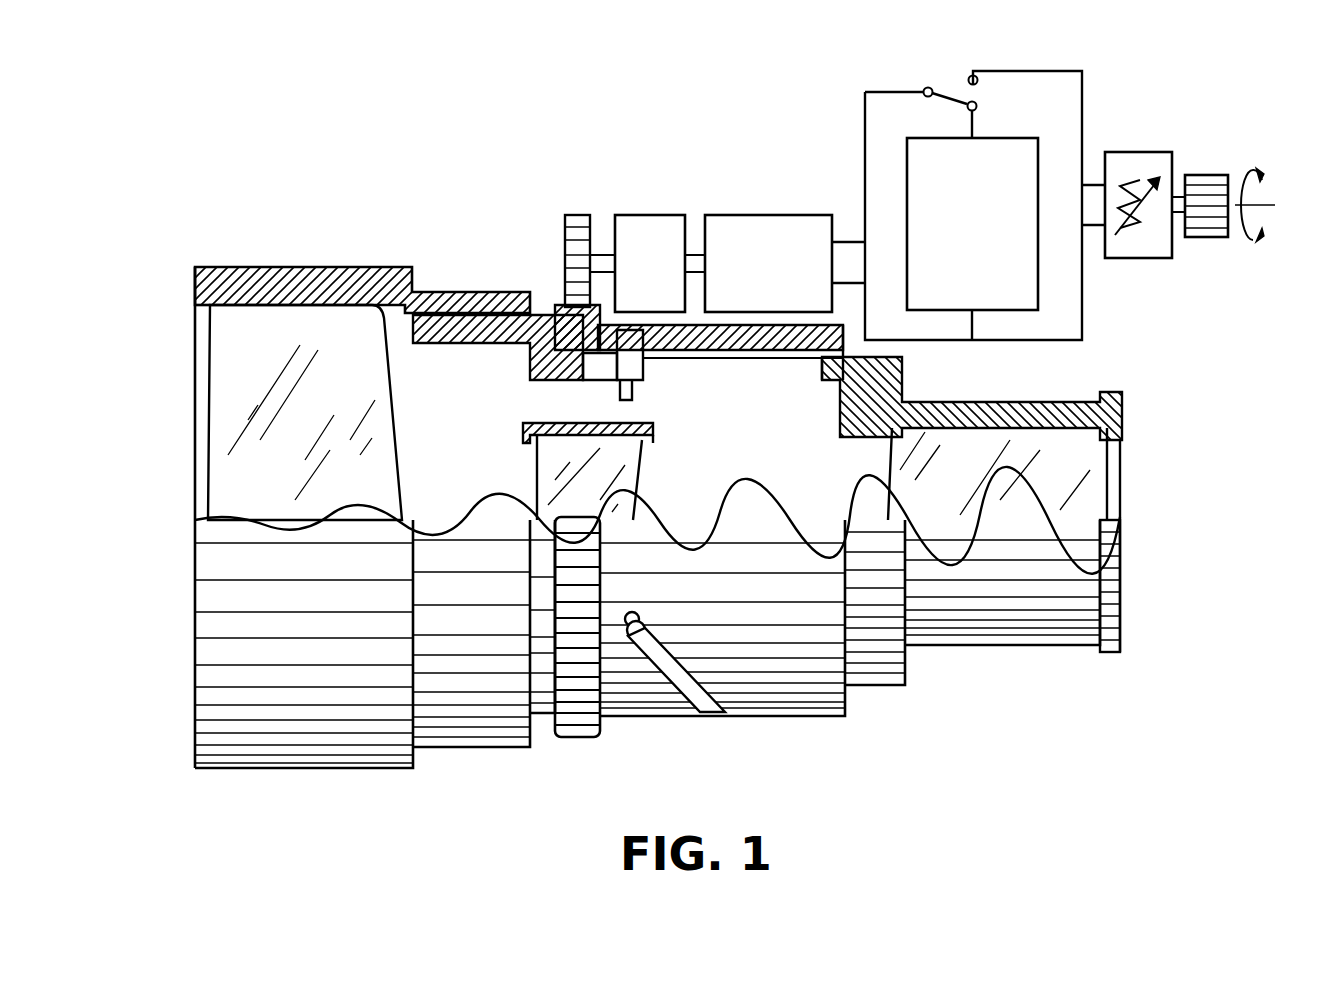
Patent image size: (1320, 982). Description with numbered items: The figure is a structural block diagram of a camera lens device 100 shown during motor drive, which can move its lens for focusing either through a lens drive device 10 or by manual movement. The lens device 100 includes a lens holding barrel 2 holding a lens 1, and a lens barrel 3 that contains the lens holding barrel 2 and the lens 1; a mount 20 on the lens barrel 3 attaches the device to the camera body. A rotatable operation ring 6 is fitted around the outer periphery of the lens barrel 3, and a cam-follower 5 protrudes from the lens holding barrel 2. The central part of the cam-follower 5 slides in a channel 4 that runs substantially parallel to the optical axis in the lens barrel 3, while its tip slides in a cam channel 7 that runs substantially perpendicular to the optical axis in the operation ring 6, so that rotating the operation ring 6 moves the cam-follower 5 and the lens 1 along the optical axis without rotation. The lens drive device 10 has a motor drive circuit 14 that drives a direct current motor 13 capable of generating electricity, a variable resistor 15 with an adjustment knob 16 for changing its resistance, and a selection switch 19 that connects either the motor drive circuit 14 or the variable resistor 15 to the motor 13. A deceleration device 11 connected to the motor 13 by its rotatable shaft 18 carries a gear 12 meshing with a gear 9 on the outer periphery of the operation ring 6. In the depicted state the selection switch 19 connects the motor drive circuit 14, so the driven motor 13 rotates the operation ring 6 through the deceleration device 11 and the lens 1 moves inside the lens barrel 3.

The lens device 100 is at (164, 219).
The lens 1 is at (638, 460).
The lens holding barrel 2 is at (523, 430).
The lens barrel 3 is at (452, 290).
The channel 4 is at (781, 366).
The cam-follower 5 is at (625, 363).
The operation ring 6 is at (690, 335).
The cam channel 7 is at (655, 338).
The gear 9 is at (585, 738).
The lens drive device 10 is at (779, 135).
The deceleration device 11 is at (685, 200).
The gear 12 is at (565, 240).
The direct current motor 13 is at (783, 264).
The motor drive circuit 14 is at (988, 236).
The variable resistor 15 is at (1160, 160).
The adjustment knob 16 is at (1215, 175).
The rotatable shaft 18 is at (694, 262).
The selection switch 19 is at (950, 90).
The mount 20 is at (1108, 652).